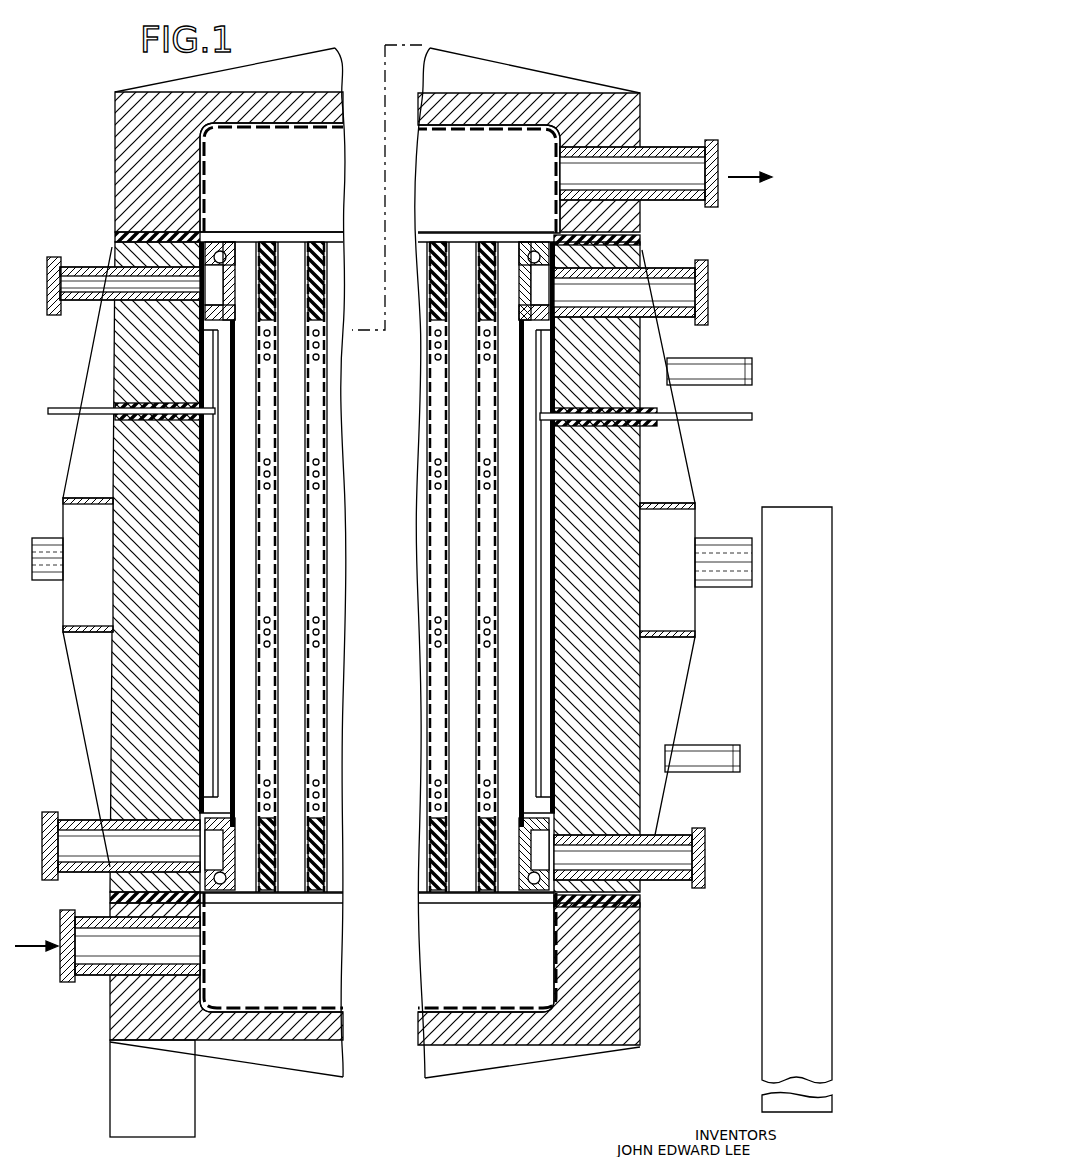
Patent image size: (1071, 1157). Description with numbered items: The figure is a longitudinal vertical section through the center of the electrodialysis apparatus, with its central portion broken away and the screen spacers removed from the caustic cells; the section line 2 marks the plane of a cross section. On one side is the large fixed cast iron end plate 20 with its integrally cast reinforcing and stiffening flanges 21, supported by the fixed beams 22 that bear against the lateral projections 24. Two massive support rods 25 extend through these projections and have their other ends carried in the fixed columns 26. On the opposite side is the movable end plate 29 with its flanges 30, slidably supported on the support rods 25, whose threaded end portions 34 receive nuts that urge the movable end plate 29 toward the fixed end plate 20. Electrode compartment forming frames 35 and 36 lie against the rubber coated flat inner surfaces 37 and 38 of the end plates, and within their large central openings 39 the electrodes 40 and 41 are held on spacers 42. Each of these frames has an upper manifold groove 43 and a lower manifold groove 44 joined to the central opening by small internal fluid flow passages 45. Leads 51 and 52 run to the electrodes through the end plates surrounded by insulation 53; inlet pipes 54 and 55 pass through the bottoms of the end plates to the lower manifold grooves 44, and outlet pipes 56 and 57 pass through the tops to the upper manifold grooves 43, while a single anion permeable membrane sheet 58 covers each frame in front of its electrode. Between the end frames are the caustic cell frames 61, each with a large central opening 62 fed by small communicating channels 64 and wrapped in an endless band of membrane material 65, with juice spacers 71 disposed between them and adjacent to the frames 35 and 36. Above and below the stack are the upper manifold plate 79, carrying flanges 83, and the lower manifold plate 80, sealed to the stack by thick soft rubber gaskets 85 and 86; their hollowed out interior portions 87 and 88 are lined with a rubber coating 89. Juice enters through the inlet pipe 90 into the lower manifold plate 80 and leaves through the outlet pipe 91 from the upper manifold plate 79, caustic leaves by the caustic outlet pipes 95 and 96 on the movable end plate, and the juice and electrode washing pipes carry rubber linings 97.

The section line 2- 2 is at (740, 50).
The fixed end plate 20 is at (125, 740).
The reinforcing and stiffening flanges 21 is at (80, 660).
The fixed beams 22 is at (197, 1105).
The lateral projections 24 is at (312, 1067).
The support rods 25 is at (45, 538).
The fixed columns 26 is at (763, 1028).
The movable end plate 29 is at (627, 703).
The reinforcing and stiffening flanges 30 is at (687, 653).
The threaded end portions 34 is at (740, 590).
The electrode compartment forming frame 35 is at (205, 800).
The electrode compartment forming frame 36 is at (547, 818).
The rubber coated flat inner surface 37 is at (200, 633).
The rubber coated flat inner surface 38 is at (553, 555).
The large central opening 39 is at (200, 522).
The electrode 40 is at (213, 580).
The electrode 41 is at (540, 618).
The spacers 42 is at (210, 345).
The upper manifold groove 43 is at (205, 262).
The lower manifold groove 44 is at (210, 862).
The internal fluid flow passages 45 is at (205, 312).
The lead 51 is at (60, 408).
The lead 52 is at (712, 422).
The insulation 53 is at (178, 422).
The inlet pipe 54 is at (50, 818).
The inlet pipe 55 is at (667, 833).
The outlet pipe 56 is at (86, 263).
The outlet pipe 57 is at (686, 270).
The anion permeable membrane sheet 58 is at (213, 486).
The caustic cell frame 61 is at (270, 569).
The large central opening 62 is at (325, 393).
The small communicating channels 64 is at (318, 352).
The endless band of membrane material 65 is at (328, 523).
The juice spacers 71 is at (288, 688).
The upper manifold plate 79 is at (642, 106).
The lower manifold plate 80 is at (641, 961).
The reinforcing and stiffening flanges 83 is at (517, 78).
The rubber gasket 85 is at (203, 218).
The rubber gasket 86 is at (263, 900).
The hollowed out interior portion 87 is at (468, 189).
The hollowed out interior portion 88 is at (456, 956).
The rubber coating 89 is at (462, 128).
The inlet pipe 90 is at (97, 975).
The outlet pipe 91 is at (688, 148).
The caustic outlet pipe 95 is at (720, 362).
The caustic outlet pipe 96 is at (718, 745).
The rubber linings 97 is at (720, 186).